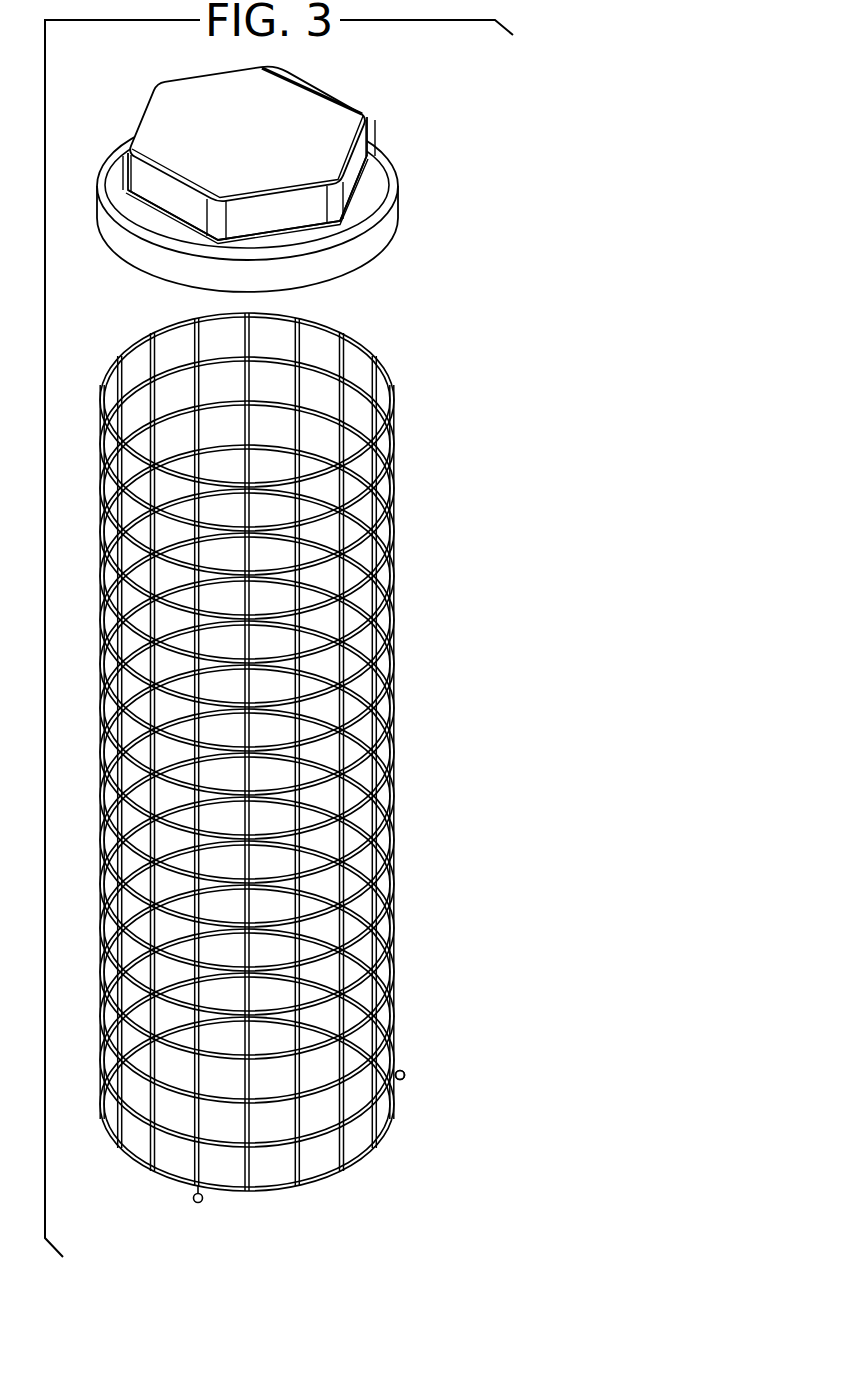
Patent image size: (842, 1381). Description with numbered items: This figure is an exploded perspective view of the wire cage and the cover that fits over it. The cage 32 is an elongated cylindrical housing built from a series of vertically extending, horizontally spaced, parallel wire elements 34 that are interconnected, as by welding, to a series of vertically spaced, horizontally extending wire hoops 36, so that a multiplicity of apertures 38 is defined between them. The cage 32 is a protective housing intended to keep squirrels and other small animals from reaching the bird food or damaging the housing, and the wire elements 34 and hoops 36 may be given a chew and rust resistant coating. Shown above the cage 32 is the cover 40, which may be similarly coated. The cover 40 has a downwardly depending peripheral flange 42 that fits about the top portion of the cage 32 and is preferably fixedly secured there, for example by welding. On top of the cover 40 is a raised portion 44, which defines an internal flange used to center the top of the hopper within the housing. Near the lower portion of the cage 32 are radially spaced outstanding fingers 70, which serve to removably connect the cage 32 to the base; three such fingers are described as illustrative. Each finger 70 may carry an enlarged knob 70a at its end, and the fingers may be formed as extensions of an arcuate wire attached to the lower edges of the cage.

The cage 32 is at (296, 786).
The wire elements 34 is at (390, 594).
The wire hoops 36 is at (392, 490).
The apertures 38 is at (315, 1155).
The cover 40 is at (293, 179).
The peripheral flange 42 is at (375, 228).
The raised portion 44 is at (371, 146).
The fingers 70 is at (403, 1069).
The enlarged knob 70a is at (404, 1080).